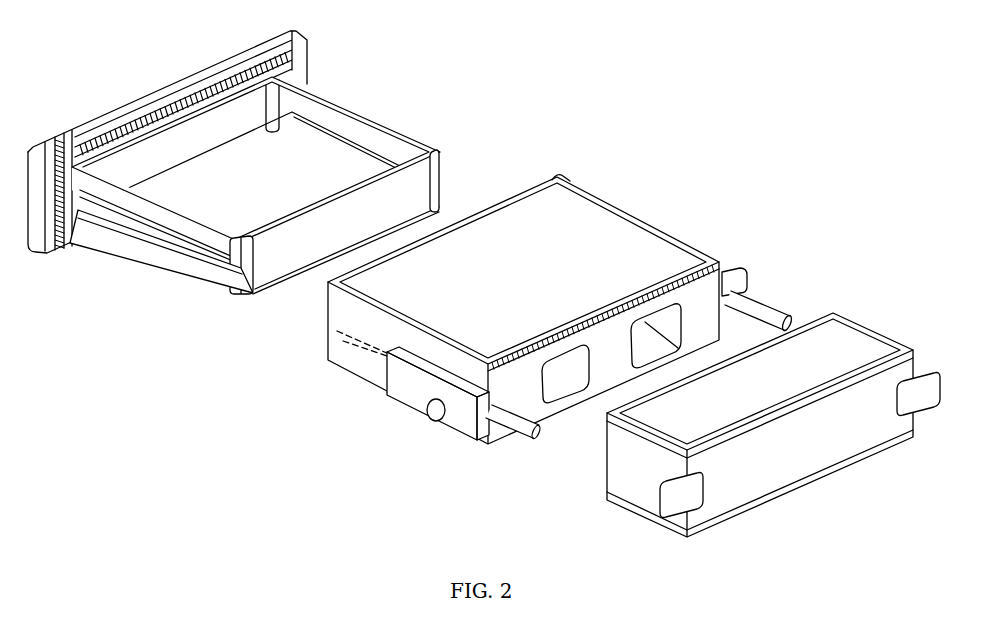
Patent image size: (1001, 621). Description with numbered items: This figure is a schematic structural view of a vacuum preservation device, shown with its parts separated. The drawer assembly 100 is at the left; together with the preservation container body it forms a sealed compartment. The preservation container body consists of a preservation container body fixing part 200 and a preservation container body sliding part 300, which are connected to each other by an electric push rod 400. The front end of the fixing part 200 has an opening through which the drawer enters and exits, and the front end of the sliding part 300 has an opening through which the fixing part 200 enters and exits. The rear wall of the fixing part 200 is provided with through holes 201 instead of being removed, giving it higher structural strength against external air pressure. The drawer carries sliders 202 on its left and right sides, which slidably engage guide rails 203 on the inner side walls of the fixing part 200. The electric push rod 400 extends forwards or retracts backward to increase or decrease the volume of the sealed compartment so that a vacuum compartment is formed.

The drawer assembly 100 is at (354, 125).
The preservation container body fixing part 200 is at (576, 236).
The through holes 201 is at (572, 382).
The sliders 202 is at (185, 248).
The guide rails 203 is at (362, 362).
The preservation container body sliding part 300 is at (841, 333).
The electric push rod 400 is at (447, 403).